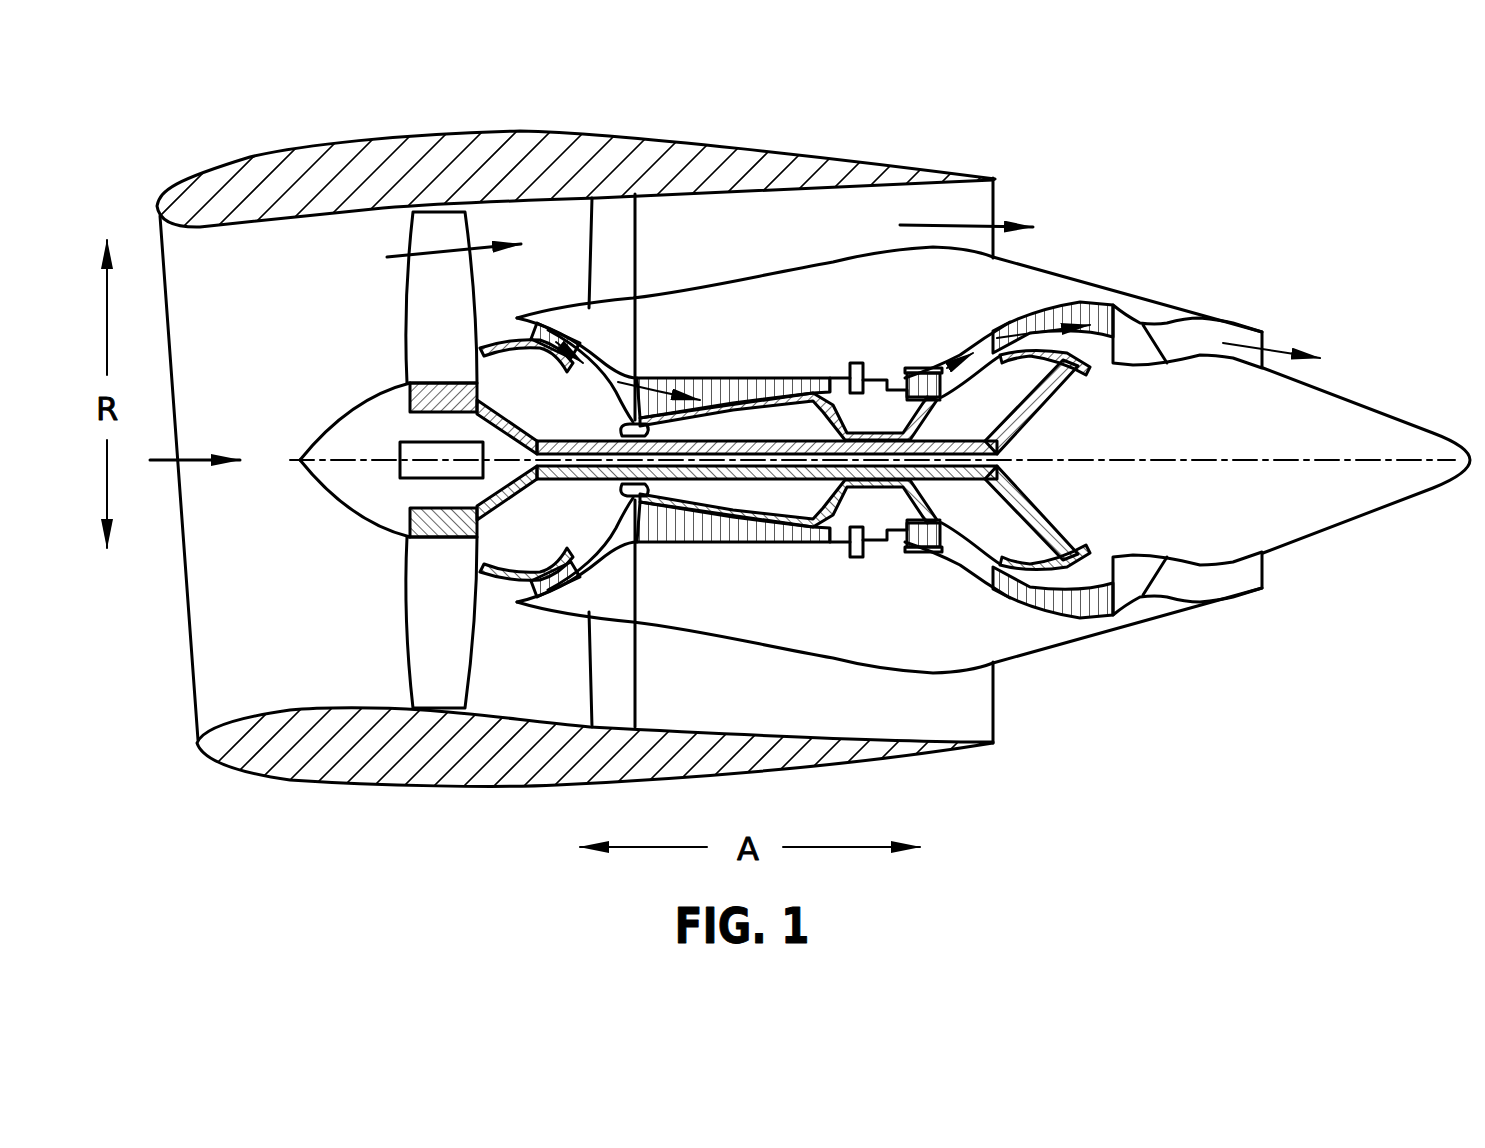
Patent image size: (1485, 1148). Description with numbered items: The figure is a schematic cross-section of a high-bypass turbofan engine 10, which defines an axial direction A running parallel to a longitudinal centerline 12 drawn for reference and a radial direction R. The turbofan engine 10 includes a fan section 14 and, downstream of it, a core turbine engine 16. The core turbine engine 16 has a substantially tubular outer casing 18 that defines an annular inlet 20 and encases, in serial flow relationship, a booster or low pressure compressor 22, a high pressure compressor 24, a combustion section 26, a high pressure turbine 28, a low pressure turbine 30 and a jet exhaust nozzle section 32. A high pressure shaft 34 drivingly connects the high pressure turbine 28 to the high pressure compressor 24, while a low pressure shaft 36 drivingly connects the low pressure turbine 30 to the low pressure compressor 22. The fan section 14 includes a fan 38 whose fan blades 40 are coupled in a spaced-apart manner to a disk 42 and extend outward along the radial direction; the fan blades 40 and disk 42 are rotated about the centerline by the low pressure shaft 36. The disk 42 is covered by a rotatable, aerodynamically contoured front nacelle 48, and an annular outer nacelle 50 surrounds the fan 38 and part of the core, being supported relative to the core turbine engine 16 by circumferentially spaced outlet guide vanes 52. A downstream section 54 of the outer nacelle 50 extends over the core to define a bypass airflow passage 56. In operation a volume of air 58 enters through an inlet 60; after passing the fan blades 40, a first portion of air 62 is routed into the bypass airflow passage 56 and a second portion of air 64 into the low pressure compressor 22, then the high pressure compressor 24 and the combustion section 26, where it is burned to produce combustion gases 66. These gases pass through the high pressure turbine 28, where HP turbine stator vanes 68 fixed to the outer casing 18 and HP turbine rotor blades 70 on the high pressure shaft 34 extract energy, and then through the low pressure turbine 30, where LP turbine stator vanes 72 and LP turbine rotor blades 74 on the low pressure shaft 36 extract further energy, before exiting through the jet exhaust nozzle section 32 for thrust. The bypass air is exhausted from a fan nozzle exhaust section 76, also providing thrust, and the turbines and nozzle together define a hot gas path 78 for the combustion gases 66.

The turbofan engine 10 is at (1248, 207).
The longitudinal centerline 12 is at (1172, 455).
The fan section 14 is at (490, 118).
The core turbine engine 16 is at (810, 326).
The outer casing 18 is at (833, 657).
The annular inlet 20 is at (527, 587).
The low pressure compressor 22 is at (592, 562).
The high pressure compressor 24 is at (670, 537).
The combustion section 26 is at (870, 535).
The high pressure turbine 28 is at (947, 540).
The low pressure turbine 30 is at (1097, 627).
The jet exhaust nozzle section 32 is at (1265, 333).
The high pressure shaft 34 is at (910, 401).
The low pressure shaft 36 is at (592, 442).
The fan 38 is at (393, 297).
The fan blades 40 is at (403, 652).
The disk 42 is at (408, 392).
The front nacelle 48 is at (332, 428).
The outer nacelle 50 is at (477, 787).
The outlet guide vanes 52 is at (636, 218).
The downstream section of the nacelle 54 is at (803, 143).
The bypass airflow passage 56 is at (752, 243).
The volume of air 58 is at (190, 452).
The inlet 60 is at (190, 698).
The first portion of air 62 is at (422, 247).
The second portion of air 64 is at (500, 333).
The combustion gases 66 is at (935, 363).
The HP turbine stator vanes 68 is at (913, 553).
The HP turbine rotor blades 70 is at (927, 547).
The LP turbine stator vanes 72 is at (1000, 587).
The LP turbine rotor blades 74 is at (1013, 597).
The fan nozzle exhaust section 76 is at (996, 200).
The hot gas path 78 is at (982, 340).